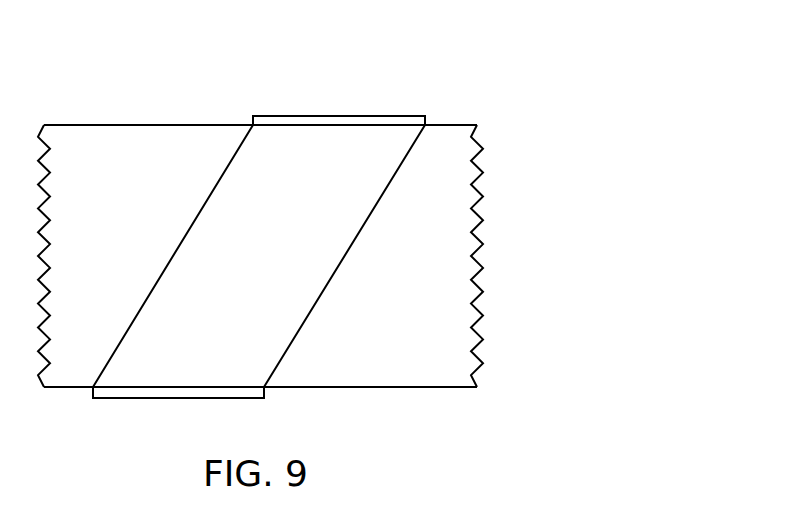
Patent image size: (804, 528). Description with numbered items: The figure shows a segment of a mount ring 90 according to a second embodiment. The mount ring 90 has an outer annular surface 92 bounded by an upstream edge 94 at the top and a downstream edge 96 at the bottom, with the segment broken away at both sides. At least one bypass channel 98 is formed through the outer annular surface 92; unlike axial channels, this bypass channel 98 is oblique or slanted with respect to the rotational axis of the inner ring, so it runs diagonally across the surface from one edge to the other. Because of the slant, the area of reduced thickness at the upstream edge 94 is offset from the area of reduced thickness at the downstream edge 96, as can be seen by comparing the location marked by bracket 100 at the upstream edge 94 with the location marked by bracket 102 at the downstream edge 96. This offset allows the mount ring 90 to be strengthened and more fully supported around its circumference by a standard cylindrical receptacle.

The mount ring 90 is at (392, 88).
The outer annular surface 92 is at (193, 132).
The upstream edge 94 is at (105, 124).
The downstream edge 96 is at (378, 388).
The bypass channel 98 is at (281, 270).
The bracket 100 is at (318, 116).
The bracket 102 is at (160, 399).